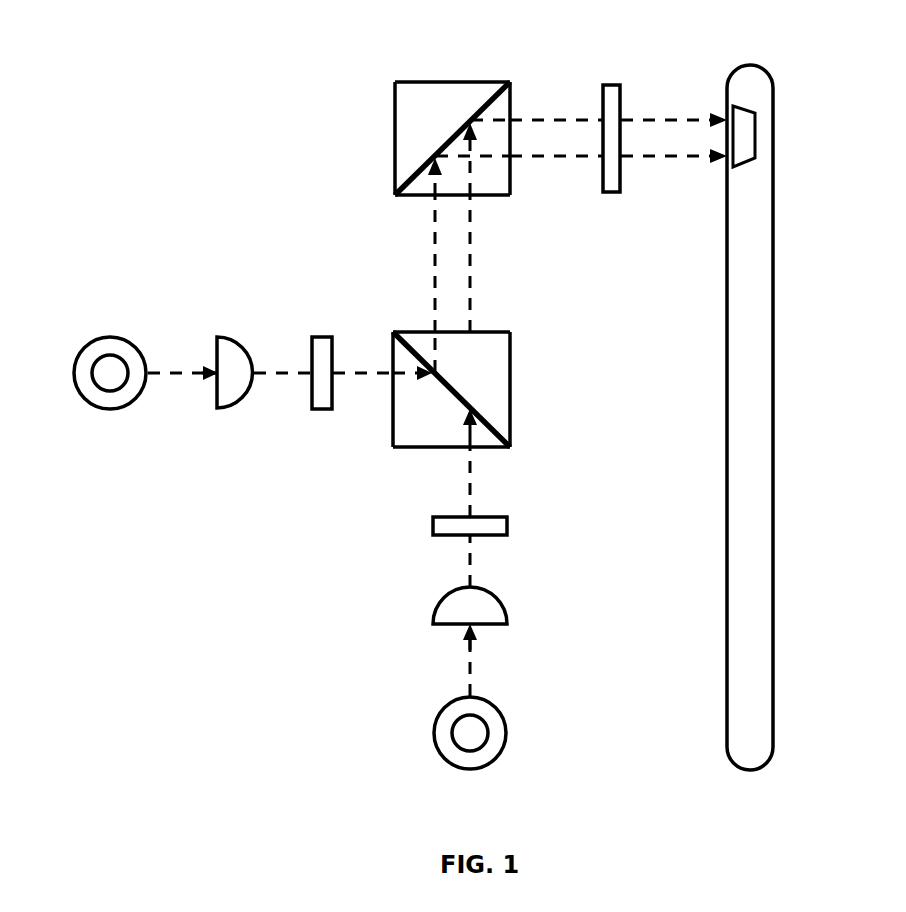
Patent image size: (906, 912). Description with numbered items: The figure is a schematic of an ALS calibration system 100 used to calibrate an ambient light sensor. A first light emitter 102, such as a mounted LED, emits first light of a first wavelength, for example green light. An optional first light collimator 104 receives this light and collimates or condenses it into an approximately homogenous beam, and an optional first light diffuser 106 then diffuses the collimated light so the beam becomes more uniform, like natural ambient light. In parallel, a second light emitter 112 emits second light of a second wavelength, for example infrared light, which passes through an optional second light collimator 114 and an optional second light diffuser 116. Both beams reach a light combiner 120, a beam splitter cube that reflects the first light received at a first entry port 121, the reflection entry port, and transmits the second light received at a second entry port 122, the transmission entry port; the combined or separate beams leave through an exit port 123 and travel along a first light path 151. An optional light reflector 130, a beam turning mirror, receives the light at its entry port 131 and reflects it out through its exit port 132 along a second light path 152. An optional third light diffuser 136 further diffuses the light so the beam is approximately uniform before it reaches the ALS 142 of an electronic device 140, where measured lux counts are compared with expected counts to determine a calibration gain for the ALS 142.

The ALS calibration system 100 is at (303, 36).
The first light emitter 102 is at (86, 346).
The first light collimator 104 is at (214, 340).
The first light diffuser 106 is at (318, 337).
The second light emitter 112 is at (436, 738).
The second light collimator 114 is at (433, 624).
The second light diffuser 116 is at (433, 518).
The light combiner 120 is at (452, 388).
The first entry port 121 is at (393, 410).
The second entry port 122 is at (497, 447).
The exit port 123 is at (494, 332).
The light reflector 130 is at (447, 154).
The entry port 131 is at (496, 195).
The exit port 132 is at (511, 106).
The third light diffuser 136 is at (624, 86).
The electronic device 140 is at (773, 553).
The ALS 142 is at (755, 133).
The first light path 151 is at (418, 272).
The second light path 152 is at (668, 200).